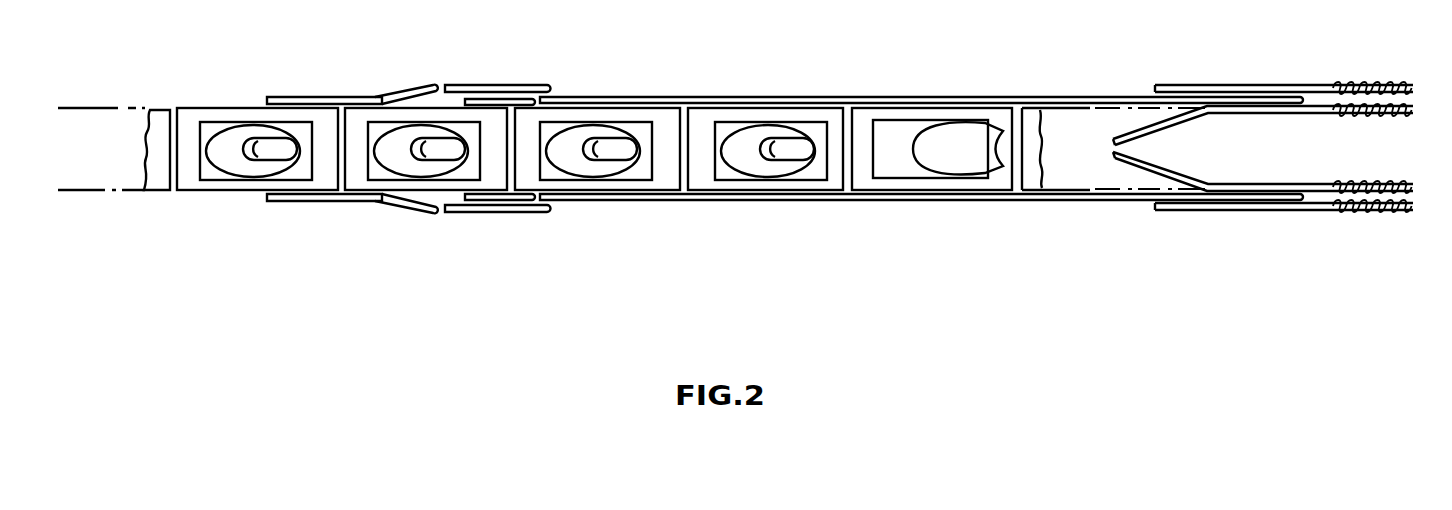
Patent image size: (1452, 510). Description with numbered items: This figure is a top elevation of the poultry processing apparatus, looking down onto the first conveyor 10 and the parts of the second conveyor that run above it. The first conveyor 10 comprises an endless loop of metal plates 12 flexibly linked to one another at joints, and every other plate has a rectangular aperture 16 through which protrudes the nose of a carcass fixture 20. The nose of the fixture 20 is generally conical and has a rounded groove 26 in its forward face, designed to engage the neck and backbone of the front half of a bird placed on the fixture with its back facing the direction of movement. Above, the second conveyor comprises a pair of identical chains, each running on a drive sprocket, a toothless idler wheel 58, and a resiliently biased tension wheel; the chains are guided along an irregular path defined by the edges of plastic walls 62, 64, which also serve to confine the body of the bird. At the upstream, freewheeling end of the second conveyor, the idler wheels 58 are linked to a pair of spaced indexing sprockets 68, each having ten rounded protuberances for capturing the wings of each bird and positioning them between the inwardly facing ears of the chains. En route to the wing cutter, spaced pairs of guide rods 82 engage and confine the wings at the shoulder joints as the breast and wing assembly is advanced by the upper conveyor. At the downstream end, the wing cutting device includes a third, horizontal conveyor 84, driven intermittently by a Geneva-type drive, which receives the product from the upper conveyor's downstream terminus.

The first conveyor 10 is at (110, 192).
The metal plates 12 is at (188, 182).
The rectangular aperture 16 is at (216, 180).
The carcass fixture 20 is at (231, 143).
The rounded groove 26 is at (271, 155).
The toothless idler wheel 58 is at (455, 89).
The plastic wall 62 is at (720, 202).
The plastic wall 64 is at (706, 96).
The indexing sprockets 68 is at (535, 86).
The guide rods 82 is at (1200, 85).
The third conveyor 84 is at (1372, 114).